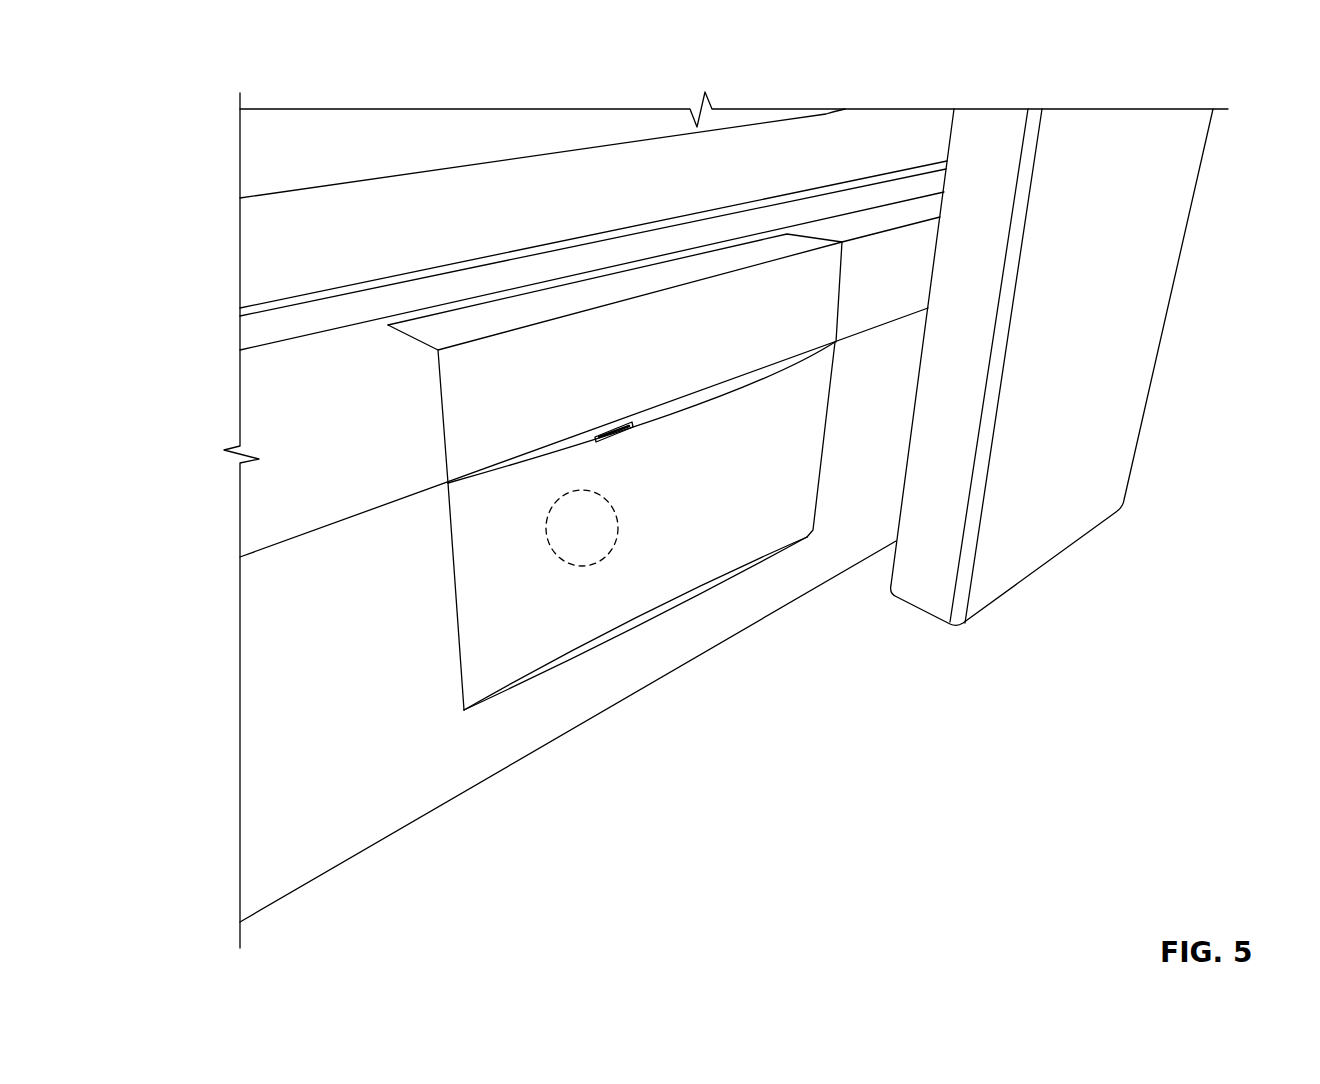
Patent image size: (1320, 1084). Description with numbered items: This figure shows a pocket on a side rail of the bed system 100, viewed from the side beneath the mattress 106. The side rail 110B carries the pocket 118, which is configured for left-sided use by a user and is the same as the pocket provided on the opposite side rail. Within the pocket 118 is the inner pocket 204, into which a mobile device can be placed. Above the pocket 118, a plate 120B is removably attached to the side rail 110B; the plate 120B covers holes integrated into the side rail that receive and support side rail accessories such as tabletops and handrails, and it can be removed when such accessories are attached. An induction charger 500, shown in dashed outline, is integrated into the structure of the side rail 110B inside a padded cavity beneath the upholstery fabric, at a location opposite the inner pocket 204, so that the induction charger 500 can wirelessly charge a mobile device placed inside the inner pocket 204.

The bed system 100 is at (246, 69).
The mattress 106 is at (434, 244).
The side rail 110B is at (362, 636).
The pocket 118 is at (770, 518).
The plate 120B is at (633, 378).
The inner pocket 204 is at (557, 438).
The induction charger 500 is at (533, 535).